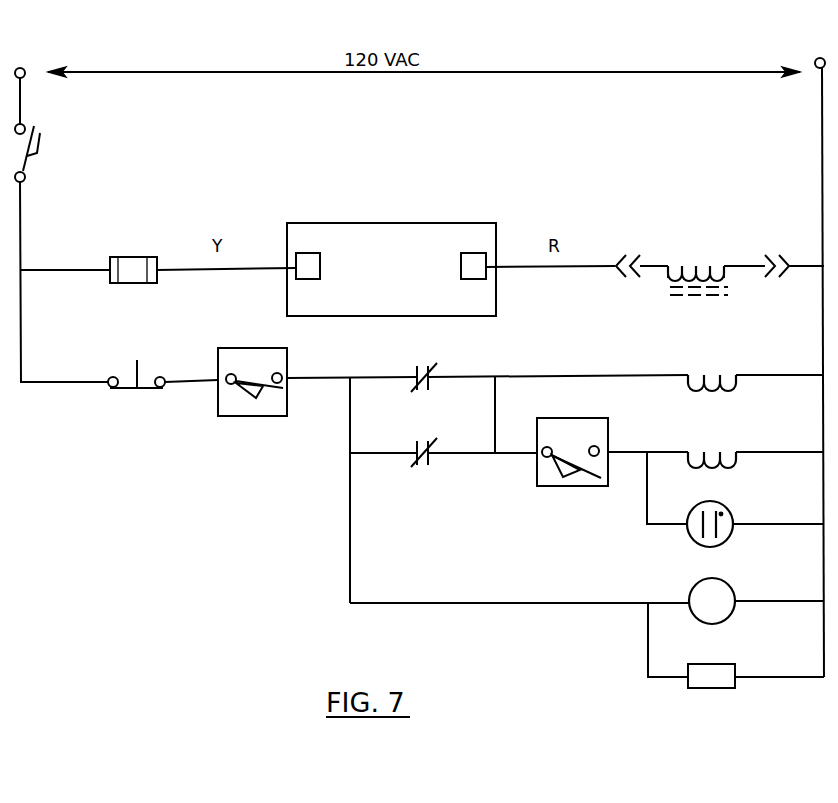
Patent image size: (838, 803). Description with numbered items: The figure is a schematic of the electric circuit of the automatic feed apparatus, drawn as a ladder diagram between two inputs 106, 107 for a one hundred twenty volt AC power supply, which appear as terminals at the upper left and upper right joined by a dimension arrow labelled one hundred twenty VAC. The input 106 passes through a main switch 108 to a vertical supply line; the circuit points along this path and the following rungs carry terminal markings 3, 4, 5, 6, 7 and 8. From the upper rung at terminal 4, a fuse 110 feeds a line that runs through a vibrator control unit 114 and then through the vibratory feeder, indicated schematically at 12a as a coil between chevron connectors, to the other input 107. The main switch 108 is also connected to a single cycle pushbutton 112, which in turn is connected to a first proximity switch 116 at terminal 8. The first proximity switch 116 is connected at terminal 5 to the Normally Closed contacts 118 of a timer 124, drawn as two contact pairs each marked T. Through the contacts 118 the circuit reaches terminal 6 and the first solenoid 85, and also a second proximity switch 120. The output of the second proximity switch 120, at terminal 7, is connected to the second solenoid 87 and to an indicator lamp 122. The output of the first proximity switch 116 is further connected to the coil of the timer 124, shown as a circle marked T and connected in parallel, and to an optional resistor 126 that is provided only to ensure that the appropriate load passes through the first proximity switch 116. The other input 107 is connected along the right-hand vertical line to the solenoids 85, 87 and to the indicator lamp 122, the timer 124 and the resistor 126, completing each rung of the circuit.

The input 106 is at (26, 66).
The other input 107 is at (814, 58).
The main switch 108 is at (36, 160).
The fuse 110 is at (117, 256).
The single cycle pushbutton 112 is at (130, 405).
The vibrator control unit 114 is at (385, 236).
The first proximity switch 116 is at (265, 418).
The Normally Closed contacts 118 is at (416, 372).
The second proximity switch 120 is at (573, 488).
The indicator lamp 122 is at (733, 538).
The timer 124 is at (731, 615).
The optional resistor 126 is at (722, 689).
The first solenoid 85 is at (708, 374).
The second solenoid 87 is at (708, 451).
The vibratory feeder 12a is at (648, 262).
The terminal 3 is at (17, 85).
The terminal 4 is at (65, 253).
The terminal 5 is at (346, 475).
The terminal 6 is at (496, 400).
The terminal 7 is at (648, 436).
The terminal 8 is at (191, 366).